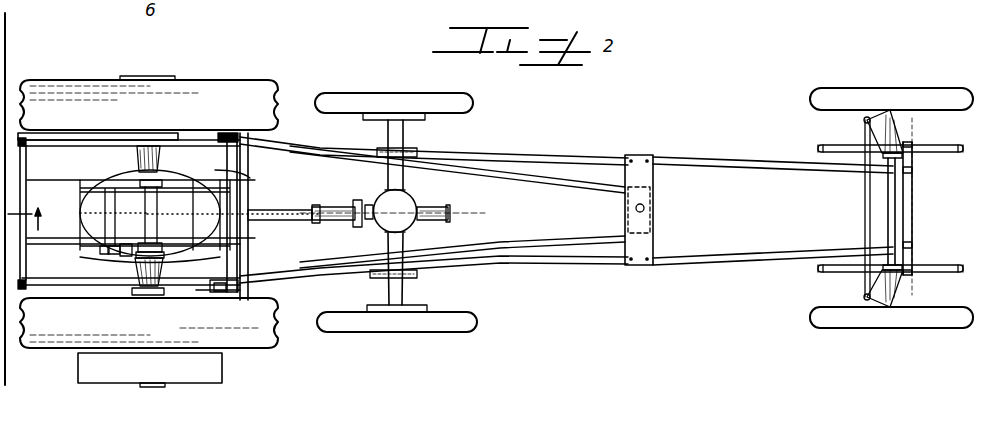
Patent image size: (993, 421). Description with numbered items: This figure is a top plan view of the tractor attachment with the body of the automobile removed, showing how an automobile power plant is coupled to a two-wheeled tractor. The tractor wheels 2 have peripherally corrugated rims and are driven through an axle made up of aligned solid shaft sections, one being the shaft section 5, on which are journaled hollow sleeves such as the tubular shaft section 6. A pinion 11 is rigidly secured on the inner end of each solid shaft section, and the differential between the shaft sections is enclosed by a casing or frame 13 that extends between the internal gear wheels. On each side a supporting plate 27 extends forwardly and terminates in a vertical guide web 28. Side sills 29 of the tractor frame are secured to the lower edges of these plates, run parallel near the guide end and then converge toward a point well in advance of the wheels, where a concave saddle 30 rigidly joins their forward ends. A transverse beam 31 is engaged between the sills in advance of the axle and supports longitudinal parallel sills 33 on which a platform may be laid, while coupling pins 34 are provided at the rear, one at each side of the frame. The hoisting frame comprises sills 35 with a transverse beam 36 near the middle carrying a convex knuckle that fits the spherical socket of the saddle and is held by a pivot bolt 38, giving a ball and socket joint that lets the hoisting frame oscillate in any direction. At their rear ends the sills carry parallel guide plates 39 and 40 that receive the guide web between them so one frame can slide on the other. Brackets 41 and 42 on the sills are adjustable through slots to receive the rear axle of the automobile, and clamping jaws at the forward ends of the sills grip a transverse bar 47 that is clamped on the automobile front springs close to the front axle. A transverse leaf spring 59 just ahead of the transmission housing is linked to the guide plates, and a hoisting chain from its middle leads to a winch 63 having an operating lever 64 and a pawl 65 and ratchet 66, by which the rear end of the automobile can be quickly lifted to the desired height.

The wheels 2 is at (233, 88).
The shaft section 5 is at (458, 195).
The tubular shaft section 6 is at (905, 283).
The pinion 11 is at (607, 195).
The casing or frame 13 is at (275, 72).
The supporting plate 27 is at (167, 265).
The guide web 28 is at (213, 292).
The side sills 29 is at (515, 240).
The concave saddle 30 is at (631, 266).
The transverse beam 31 is at (248, 178).
The longitudinal parallel sills 33 is at (80, 178).
The coupling pins 34 is at (18, 138).
The sills 35 is at (707, 162).
The transverse beam 36 is at (642, 172).
The pivot bolt 38 is at (645, 213).
The guide plate 39 is at (220, 282).
The guide plate 40 is at (215, 288).
The bracket 41 is at (412, 150).
The bracket 42 is at (390, 148).
The transverse bar 47 is at (920, 195).
The leaf spring 59 is at (230, 167).
The winch 63 is at (152, 197).
The lever 64 is at (128, 254).
The pawl 65 is at (110, 247).
The ratchet 66 is at (157, 248).